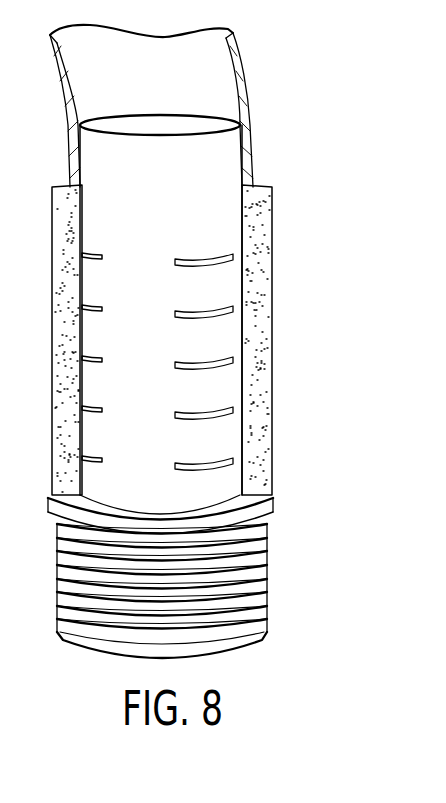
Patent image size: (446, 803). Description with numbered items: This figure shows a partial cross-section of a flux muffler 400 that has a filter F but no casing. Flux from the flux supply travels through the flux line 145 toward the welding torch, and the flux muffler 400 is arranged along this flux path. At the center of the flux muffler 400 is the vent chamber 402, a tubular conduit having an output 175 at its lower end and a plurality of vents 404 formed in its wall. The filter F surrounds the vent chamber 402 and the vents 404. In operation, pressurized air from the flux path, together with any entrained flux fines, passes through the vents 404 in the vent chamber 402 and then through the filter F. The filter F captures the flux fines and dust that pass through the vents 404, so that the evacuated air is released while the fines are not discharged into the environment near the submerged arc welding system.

The flux line 145 is at (243, 58).
The flux muffler 400 is at (291, 126).
The vent chamber 402 is at (200, 165).
The vents 404 is at (210, 257).
The filter F is at (273, 312).
The output 175 is at (268, 560).